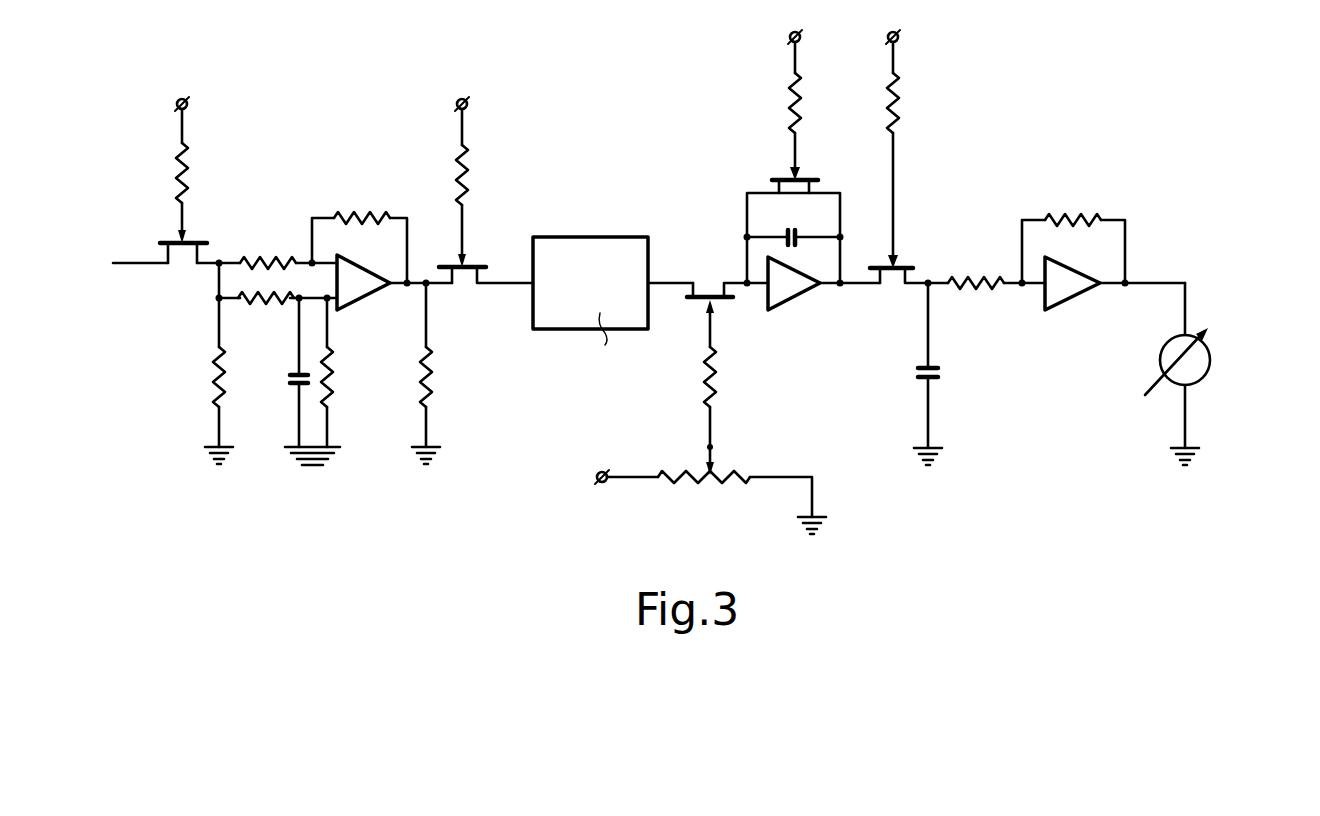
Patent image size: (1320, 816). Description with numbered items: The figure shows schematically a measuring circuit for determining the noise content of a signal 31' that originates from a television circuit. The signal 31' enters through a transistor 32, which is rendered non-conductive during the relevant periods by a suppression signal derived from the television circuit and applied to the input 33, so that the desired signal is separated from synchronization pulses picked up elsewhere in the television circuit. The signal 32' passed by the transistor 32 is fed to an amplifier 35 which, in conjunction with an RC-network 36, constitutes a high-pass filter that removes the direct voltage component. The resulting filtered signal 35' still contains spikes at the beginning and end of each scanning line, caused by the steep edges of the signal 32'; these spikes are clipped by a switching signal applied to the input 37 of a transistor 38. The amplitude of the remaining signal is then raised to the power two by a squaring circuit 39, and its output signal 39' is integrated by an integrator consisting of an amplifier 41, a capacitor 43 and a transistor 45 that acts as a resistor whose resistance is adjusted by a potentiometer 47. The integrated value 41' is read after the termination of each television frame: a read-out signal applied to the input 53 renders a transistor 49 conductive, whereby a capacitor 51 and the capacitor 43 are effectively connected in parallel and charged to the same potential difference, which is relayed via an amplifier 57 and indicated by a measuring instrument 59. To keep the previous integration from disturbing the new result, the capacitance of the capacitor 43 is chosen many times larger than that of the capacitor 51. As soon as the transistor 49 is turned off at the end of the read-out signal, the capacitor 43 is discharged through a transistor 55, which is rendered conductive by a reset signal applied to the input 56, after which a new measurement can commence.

The signal 31' is at (140, 241).
The transistor 32 is at (217, 221).
The signal passed by the transistor 32' is at (199, 293).
The input 33 is at (190, 104).
The amplifier 35 is at (334, 242).
The filtered signal 35' is at (456, 314).
The RC-network 36 is at (260, 426).
The input 37 is at (470, 104).
The transistor 38 is at (479, 255).
The squaring circuit 39 is at (573, 293).
The output signal 39' is at (673, 242).
The amplifier 41 is at (804, 300).
The integrated value 41' is at (862, 313).
The capacitor 43 is at (785, 235).
The transistor 45 is at (713, 265).
The potentiometer 47 is at (723, 485).
The transistor 49 is at (911, 250).
The capacitor 51 is at (940, 367).
The input 53 is at (903, 37).
The transistor 55 is at (787, 37).
The input 56 is at (813, 168).
The amplifier 57 is at (1075, 282).
The measuring instrument 59 is at (1212, 362).